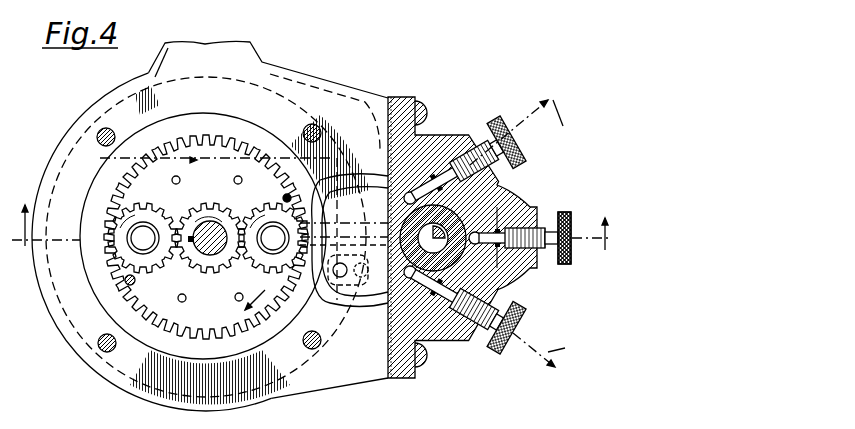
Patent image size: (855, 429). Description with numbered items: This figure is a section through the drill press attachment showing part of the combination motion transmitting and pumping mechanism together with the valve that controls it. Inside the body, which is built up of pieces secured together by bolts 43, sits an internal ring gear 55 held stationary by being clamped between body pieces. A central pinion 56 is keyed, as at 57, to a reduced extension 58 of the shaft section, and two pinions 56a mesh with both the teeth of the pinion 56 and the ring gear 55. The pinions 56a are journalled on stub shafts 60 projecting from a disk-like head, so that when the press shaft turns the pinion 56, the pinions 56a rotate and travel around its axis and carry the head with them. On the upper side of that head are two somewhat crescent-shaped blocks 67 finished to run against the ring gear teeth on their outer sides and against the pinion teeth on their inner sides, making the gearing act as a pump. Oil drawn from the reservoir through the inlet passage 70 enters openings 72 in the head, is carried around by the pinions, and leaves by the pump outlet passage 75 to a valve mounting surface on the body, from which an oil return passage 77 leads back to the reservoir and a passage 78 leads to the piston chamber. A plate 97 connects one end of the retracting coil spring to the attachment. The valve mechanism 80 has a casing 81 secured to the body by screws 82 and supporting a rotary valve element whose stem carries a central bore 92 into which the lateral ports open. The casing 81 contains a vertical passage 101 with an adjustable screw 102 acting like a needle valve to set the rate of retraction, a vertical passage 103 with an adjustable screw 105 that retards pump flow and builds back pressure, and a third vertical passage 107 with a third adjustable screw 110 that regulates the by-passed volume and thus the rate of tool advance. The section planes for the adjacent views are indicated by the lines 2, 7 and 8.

The section line 2 is at (296, 329).
The section line 7 is at (293, 181).
The section line 8 is at (319, 253).
The bolts 43 is at (98, 137).
The internal ring gear 55 is at (92, 207).
The pinion 56 is at (212, 205).
The pinions 56a is at (162, 210).
The key 57 is at (193, 245).
The reduced extension 58 is at (226, 258).
The stub shafts 60 is at (148, 245).
The crescent-shaped blocks 67 is at (222, 179).
The inlet passage 70 is at (340, 266).
The openings 72 is at (135, 284).
The pump outlet passage 75 is at (372, 178).
The oil return passage 77 is at (362, 279).
The piston chamber passage 78 is at (206, 237).
The valve mechanism 80 is at (440, 135).
The casing 81 is at (502, 200).
The screws 82 is at (428, 108).
The central bore 92 is at (500, 180).
The plate 97 is at (168, 58).
The vertical passage 101 is at (382, 300).
The adjustable screw 102 is at (504, 347).
The vertical passage 103 is at (376, 172).
The adjustable screw 105 is at (502, 128).
The third vertical passage 107 is at (508, 266).
The third adjustable screw 110 is at (568, 212).